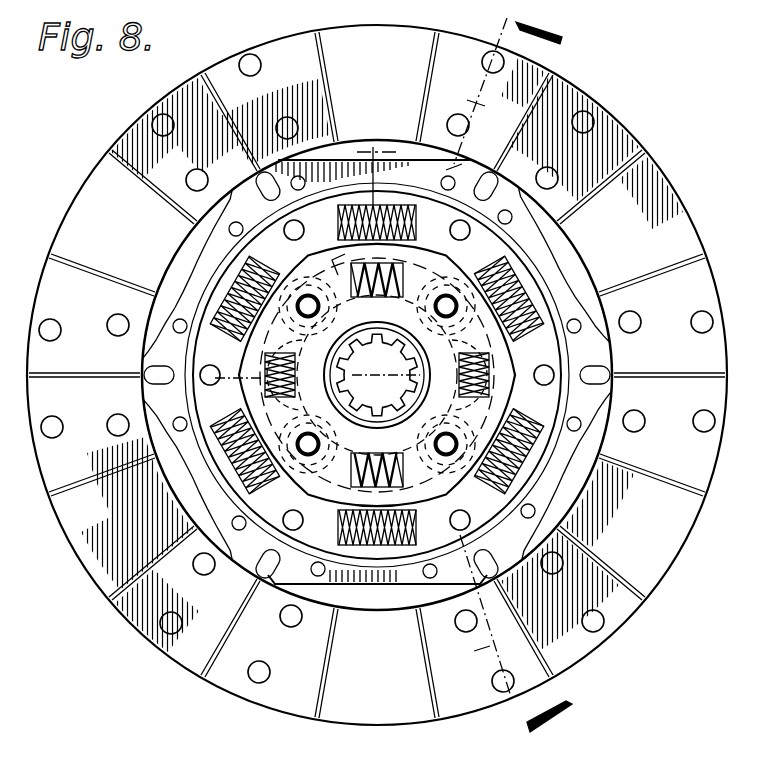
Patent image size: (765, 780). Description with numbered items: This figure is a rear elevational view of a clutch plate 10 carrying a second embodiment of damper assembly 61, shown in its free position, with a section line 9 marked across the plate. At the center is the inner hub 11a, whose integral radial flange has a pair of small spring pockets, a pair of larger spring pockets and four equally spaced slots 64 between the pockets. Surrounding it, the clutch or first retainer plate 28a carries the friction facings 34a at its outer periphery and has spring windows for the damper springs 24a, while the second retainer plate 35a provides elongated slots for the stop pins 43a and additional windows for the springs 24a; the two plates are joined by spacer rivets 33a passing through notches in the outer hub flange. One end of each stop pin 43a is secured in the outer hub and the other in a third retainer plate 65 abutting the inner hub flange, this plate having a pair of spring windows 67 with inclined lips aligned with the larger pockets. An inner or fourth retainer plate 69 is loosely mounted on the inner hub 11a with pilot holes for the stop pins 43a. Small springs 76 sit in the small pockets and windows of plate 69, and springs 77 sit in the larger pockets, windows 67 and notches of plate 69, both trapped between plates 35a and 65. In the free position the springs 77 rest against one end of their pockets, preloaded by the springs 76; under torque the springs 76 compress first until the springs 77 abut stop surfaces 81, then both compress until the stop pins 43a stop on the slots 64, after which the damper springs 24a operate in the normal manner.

The section line 9- 9 is at (509, 383).
The hub 10 is at (314, 375).
The inner hub 11a is at (337, 470).
The damper springs 24a is at (527, 297).
The clutch or first retainer plate 28a is at (147, 386).
The spacer rivets 33a is at (284, 236).
The friction facings 34a is at (86, 522).
The second retainer plate 35a is at (255, 512).
The stop pins 43a is at (452, 308).
The damper assembly 61 is at (625, 108).
The slots 64 is at (511, 392).
The third retainer plate 65 is at (313, 262).
The spring windows 67 is at (407, 283).
The inner or fourth retainer plate 69 is at (291, 372).
The small springs 76 is at (528, 346).
The springs 77 is at (376, 386).
The stop surfaces 81 is at (337, 265).